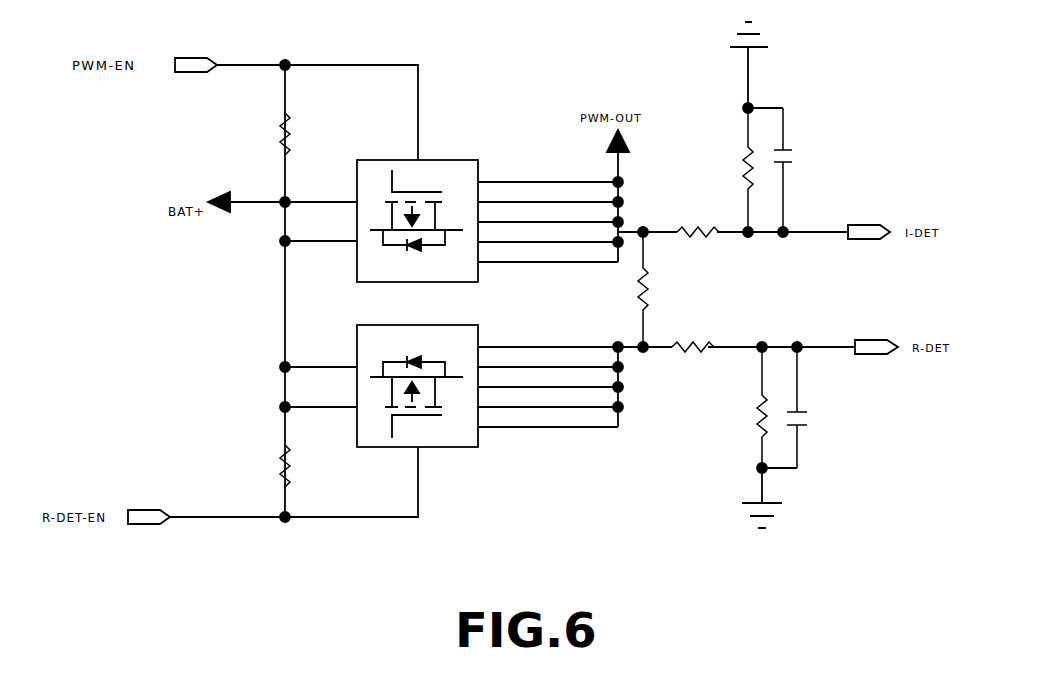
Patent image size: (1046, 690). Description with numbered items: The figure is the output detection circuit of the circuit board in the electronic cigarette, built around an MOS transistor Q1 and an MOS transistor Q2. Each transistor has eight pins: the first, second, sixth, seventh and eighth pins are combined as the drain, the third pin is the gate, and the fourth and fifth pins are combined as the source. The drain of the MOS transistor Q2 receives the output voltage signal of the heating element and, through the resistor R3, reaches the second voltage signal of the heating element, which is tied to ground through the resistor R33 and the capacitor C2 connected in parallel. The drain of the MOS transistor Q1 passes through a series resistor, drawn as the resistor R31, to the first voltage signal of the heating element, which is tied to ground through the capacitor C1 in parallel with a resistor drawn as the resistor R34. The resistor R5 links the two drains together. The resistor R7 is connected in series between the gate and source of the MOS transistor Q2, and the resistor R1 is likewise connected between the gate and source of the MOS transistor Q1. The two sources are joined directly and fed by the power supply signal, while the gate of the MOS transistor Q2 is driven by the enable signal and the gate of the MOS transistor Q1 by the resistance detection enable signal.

The resistor R7 is at (273, 134).
The resistor R1 is at (274, 466).
The resistor R3 is at (698, 225).
The resistor R5 is at (633, 289).
The resistor R31 is at (693, 340).
The resistor R33 is at (733, 170).
The resistor R34 is at (747, 407).
The capacitor C1 is at (813, 407).
The capacitor C2 is at (796, 170).
The MOS transistor Q1 is at (480, 397).
The MOS transistor Q2 is at (480, 213).